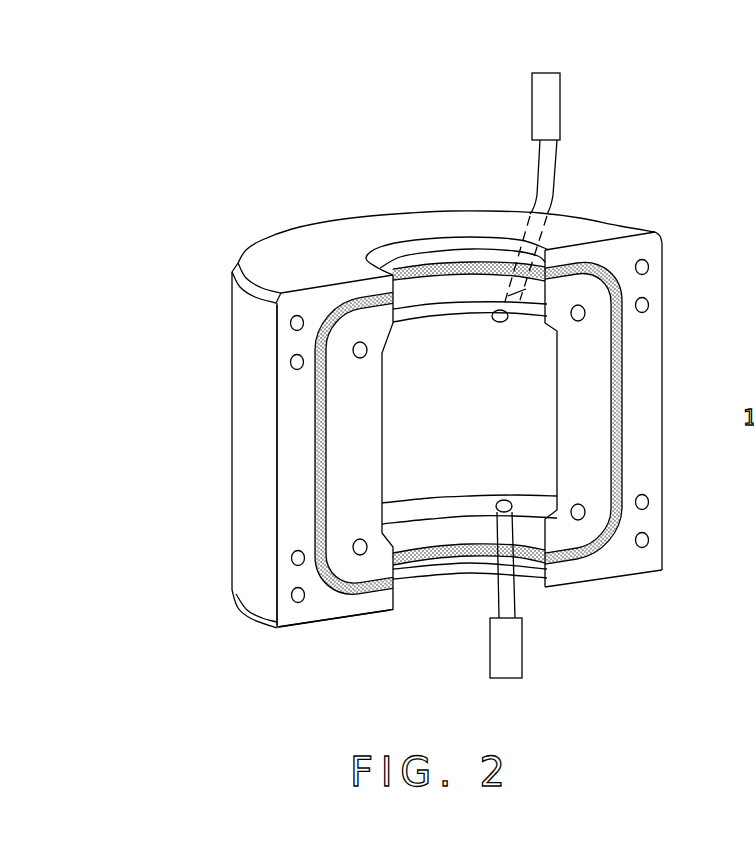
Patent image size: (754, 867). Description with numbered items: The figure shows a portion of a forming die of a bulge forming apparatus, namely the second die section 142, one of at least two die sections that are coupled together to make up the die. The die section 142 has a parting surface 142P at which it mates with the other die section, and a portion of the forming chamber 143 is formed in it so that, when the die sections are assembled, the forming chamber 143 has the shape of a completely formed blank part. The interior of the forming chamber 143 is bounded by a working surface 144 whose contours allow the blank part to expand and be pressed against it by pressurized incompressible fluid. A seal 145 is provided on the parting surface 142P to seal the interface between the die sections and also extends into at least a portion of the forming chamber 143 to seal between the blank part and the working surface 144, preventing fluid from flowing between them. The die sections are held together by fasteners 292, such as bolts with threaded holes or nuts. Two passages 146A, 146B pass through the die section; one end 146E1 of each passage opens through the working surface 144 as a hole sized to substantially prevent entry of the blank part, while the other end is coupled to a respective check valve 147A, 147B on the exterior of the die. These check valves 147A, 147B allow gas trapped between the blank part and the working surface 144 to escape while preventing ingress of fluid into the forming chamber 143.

The second die section 142 is at (340, 210).
The parting surface 142P is at (289, 462).
The forming chamber 143 is at (398, 680).
The working surface 144 is at (444, 333).
The seal 145 is at (575, 560).
The passage 146A is at (553, 168).
The passage 146B is at (492, 594).
The end of passage 146E1 is at (500, 322).
The check valve 147A is at (560, 96).
The check valve 147B is at (513, 678).
The fasteners 292 is at (645, 267).